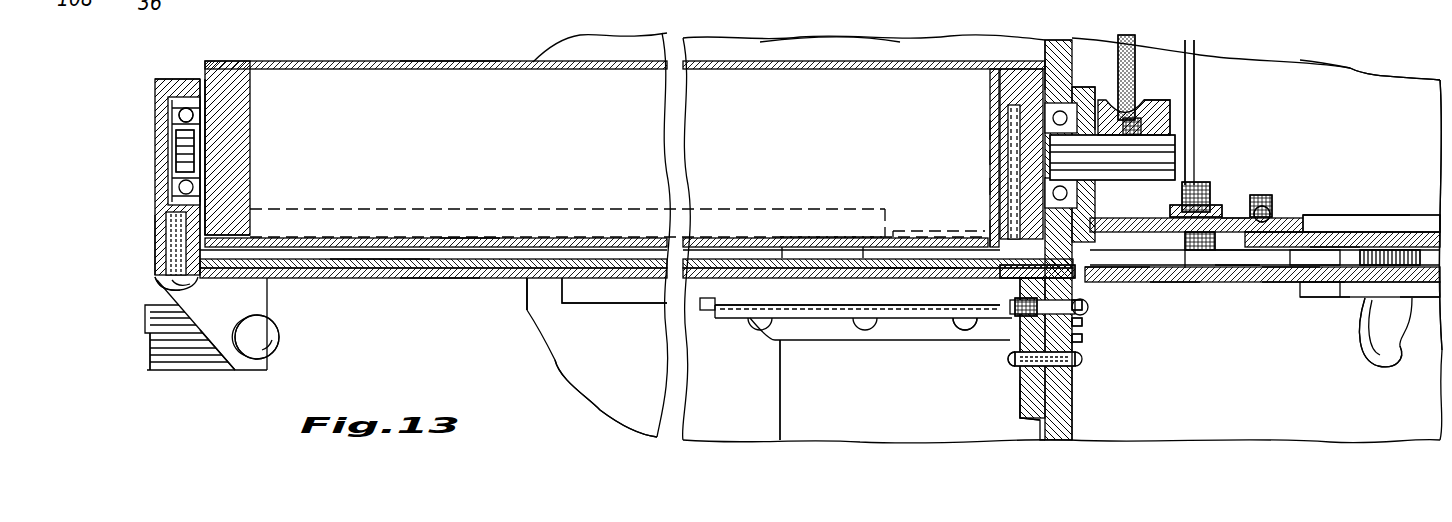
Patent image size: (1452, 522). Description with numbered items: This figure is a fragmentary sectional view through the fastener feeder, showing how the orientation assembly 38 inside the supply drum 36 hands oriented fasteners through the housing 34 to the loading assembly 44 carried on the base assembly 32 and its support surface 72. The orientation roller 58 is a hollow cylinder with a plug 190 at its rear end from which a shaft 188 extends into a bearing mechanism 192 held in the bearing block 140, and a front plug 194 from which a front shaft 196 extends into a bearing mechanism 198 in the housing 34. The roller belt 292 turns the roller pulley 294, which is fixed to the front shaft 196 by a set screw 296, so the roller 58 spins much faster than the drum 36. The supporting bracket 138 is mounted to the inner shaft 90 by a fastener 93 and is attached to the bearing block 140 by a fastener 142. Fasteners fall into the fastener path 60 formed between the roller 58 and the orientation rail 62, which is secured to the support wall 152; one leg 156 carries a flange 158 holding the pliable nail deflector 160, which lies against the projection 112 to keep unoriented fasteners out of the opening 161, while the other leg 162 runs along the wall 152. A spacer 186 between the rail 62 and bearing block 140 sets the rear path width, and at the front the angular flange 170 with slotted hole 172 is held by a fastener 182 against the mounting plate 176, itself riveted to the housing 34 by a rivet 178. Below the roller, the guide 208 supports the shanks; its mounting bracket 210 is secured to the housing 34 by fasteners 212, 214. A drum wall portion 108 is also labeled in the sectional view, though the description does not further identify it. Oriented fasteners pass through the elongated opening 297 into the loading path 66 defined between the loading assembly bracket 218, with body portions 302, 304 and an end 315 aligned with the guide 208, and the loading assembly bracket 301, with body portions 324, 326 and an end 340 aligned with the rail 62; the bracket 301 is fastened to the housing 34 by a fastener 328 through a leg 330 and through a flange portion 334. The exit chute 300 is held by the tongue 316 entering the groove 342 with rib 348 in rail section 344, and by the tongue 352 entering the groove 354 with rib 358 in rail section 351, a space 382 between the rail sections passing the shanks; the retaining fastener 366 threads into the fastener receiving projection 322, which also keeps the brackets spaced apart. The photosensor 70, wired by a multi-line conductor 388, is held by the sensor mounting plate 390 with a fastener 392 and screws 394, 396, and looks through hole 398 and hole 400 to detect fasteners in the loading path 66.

The base assembly 32 is at (1424, 72).
The housing 34 is at (1064, 24).
The supply drum 36 is at (610, 433).
The orientation assembly 38 is at (452, 357).
The loading assembly 44 is at (1340, 116).
The orientation roller 58 is at (448, 62).
The fastener path 60 is at (386, 256).
The orientation rail 62 is at (436, 270).
The loading path 66 is at (1170, 290).
The photosensor 70 is at (1212, 206).
The support surface 72 is at (1374, 84).
The inner shaft 90 is at (190, 372).
The fastener 93 is at (280, 342).
The frame wall 108 is at (590, 388).
The projection 112 is at (826, 42).
The supporting bracket 138 is at (240, 372).
The bearing block 140 is at (158, 86).
The fastener 142 is at (162, 284).
The support wall 152 is at (522, 278).
The leg 156 is at (645, 298).
The flange 158 is at (828, 320).
The nail deflector 160 is at (848, 336).
The opening 161 is at (926, 270).
The leg 162 is at (468, 272).
The angular flange 170 is at (1012, 345).
The slotted hole 172 is at (1000, 322).
The mounting plate 176 is at (1018, 360).
The rivet 178 is at (1082, 364).
The fastener 182 is at (962, 320).
The spacer 186 is at (160, 250).
The shaft 188 is at (176, 154).
The plug 190 is at (252, 92).
The bearing mechanism 192 is at (184, 100).
The front plug 194 is at (1045, 62).
The front shaft 196 is at (1196, 112).
The bearing mechanism 198 is at (1086, 96).
The guide 208 is at (812, 236).
The mounting bracket 210 is at (990, 160).
The fastener 212 is at (990, 133).
The fastener 214 is at (990, 187).
The loading assembly bracket 218 is at (1298, 226).
The roller belt 292 is at (1125, 42).
The roller pulley 294 is at (1196, 95).
The set screw 296 is at (1150, 106).
The elongated opening 297 is at (1136, 276).
The exit chute 300 is at (1330, 286).
The loading assembly bracket 301 is at (1280, 286).
The body portion 302 is at (1238, 216).
The body portion 304 is at (1282, 214).
The end 315 is at (990, 238).
The tongue 316 is at (1320, 240).
The fastener receiving projection 322 is at (1398, 250).
The body portion 324 is at (1270, 270).
The body portion 326 is at (1264, 270).
The fastener 328 is at (1086, 306).
The leg 330 is at (1086, 324).
The flange portion 334 is at (1086, 340).
The end 340 is at (1012, 302).
The groove 342 is at (1415, 216).
The rail section 344 is at (1380, 216).
The rib 348 is at (1366, 215).
The rail section 351 is at (1356, 298).
The tongue 352 is at (1340, 286).
The groove 354 is at (1424, 290).
The rib 358 is at (1346, 298).
The retaining fastener 366 is at (1372, 368).
The space 382 is at (1380, 298).
The multi-line conductor 388 is at (1190, 42).
The sensor mounting plate 390 is at (1218, 200).
The fastener 392 is at (1186, 270).
The screw 394 is at (1112, 157).
The screw 396 is at (1268, 196).
The hole 398 is at (1222, 268).
The hole 400 is at (1150, 282).